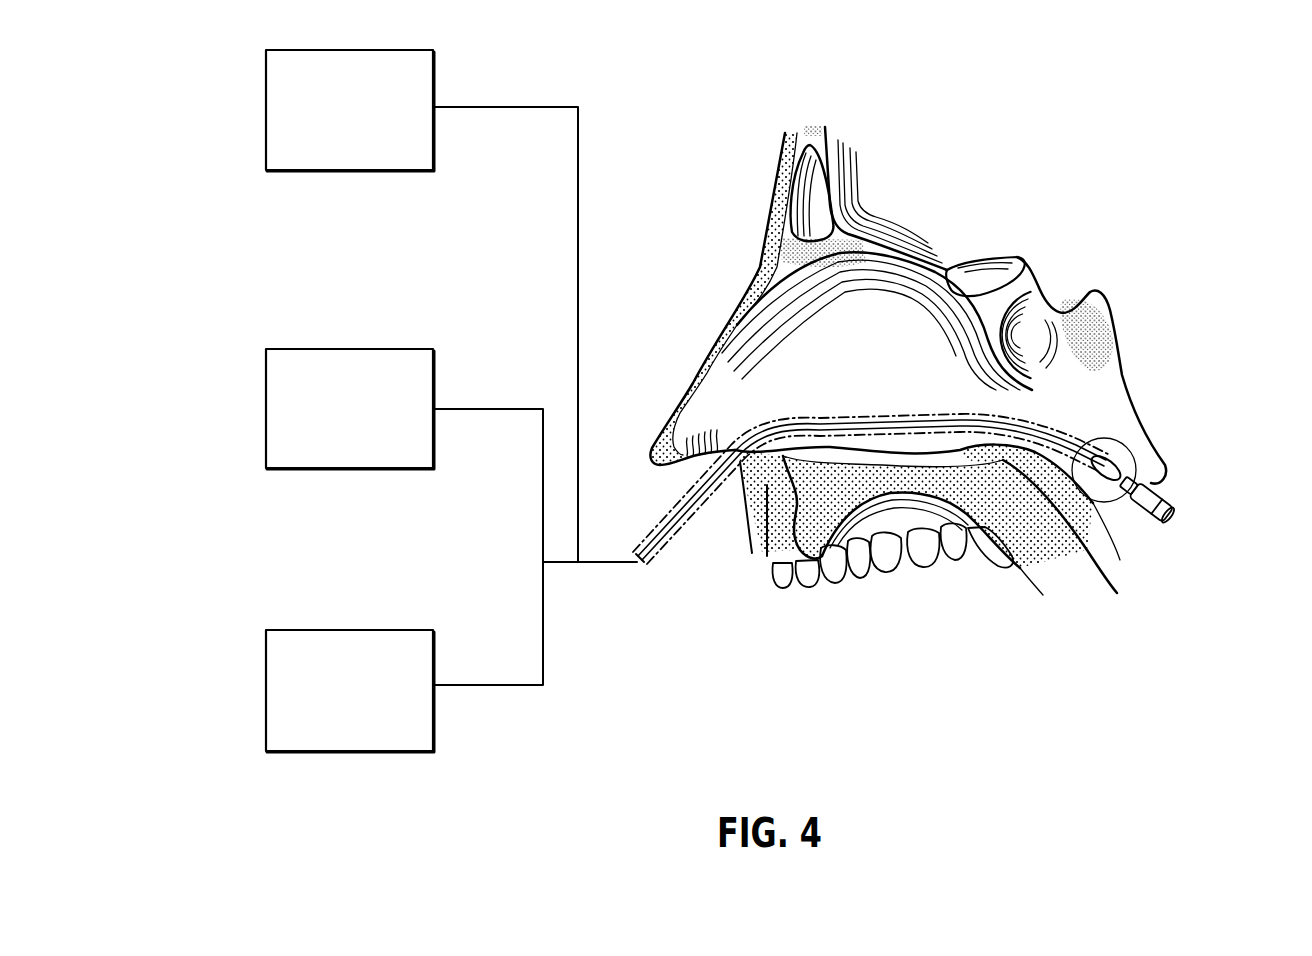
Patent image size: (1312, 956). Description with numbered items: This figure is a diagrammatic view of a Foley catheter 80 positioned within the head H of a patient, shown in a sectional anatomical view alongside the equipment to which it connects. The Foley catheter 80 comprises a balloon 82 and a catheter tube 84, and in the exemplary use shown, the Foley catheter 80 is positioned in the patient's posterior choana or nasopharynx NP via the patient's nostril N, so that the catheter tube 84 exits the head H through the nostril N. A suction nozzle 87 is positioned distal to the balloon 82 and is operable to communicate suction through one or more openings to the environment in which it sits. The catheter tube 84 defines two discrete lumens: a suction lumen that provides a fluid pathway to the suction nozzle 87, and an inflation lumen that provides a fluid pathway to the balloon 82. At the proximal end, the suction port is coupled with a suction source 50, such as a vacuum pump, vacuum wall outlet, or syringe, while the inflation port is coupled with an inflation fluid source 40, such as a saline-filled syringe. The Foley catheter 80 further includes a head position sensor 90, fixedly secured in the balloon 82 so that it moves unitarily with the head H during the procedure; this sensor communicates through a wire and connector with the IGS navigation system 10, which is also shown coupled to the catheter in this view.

The IGS navigation system 10 is at (266, 678).
The inflation fluid source 40 is at (266, 398).
The suction source 50 is at (266, 100).
The Foley catheter 80 is at (957, 519).
The balloon 82 is at (1124, 520).
The catheter tube 84 is at (668, 543).
The suction nozzle 87 is at (1180, 508).
The head position sensor 90 is at (1114, 456).
The nostril N is at (740, 428).
The nasopharynx NP is at (1000, 400).
The head H is at (1008, 220).